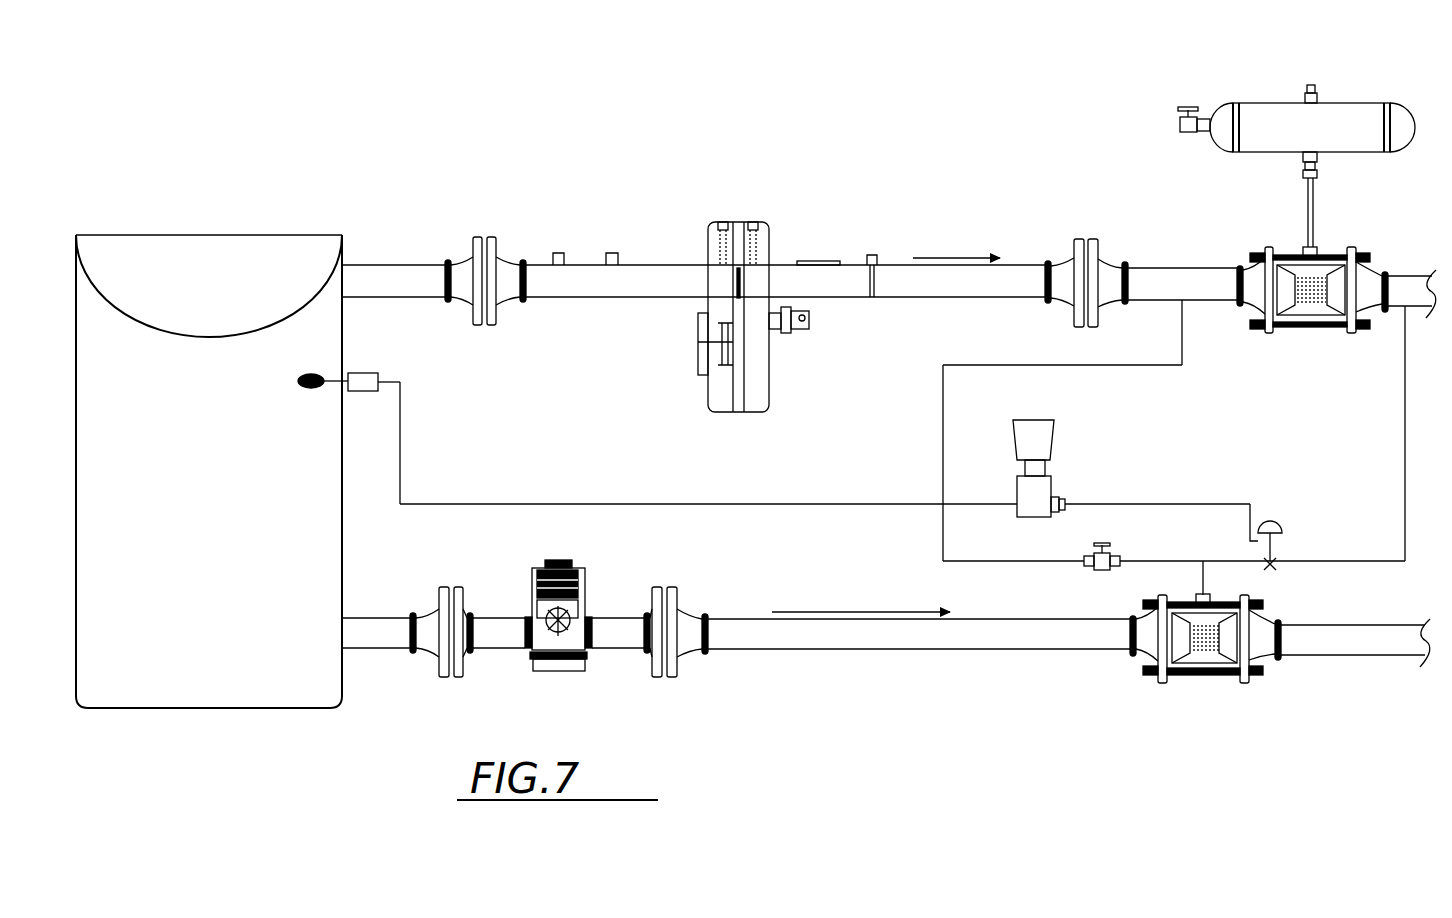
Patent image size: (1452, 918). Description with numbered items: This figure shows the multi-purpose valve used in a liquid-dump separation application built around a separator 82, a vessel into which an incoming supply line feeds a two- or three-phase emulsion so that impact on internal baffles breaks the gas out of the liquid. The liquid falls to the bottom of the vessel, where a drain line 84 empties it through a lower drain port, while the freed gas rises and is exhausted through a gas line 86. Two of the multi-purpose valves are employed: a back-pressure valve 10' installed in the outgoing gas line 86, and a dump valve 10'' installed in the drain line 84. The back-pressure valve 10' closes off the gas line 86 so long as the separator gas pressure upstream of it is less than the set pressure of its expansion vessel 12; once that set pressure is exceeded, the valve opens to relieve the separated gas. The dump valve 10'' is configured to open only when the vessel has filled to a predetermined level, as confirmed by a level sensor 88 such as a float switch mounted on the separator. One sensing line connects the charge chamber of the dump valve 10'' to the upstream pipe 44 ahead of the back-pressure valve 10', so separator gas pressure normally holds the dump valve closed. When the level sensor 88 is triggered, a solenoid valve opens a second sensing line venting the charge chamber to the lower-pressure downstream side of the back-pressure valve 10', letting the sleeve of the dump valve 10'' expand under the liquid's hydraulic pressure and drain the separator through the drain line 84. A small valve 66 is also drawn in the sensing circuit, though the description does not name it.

The separator 82 is at (339, 192).
The gas line 86 is at (781, 248).
The upstream pipe 44 is at (1157, 290).
The expansion vessel 12 is at (1262, 115).
The back-pressure valve 10' is at (1336, 255).
The dump valve 10'' is at (1280, 622).
The needle valve 66 is at (1108, 558).
The level sensor 88 is at (1276, 525).
The drain line 84 is at (880, 659).